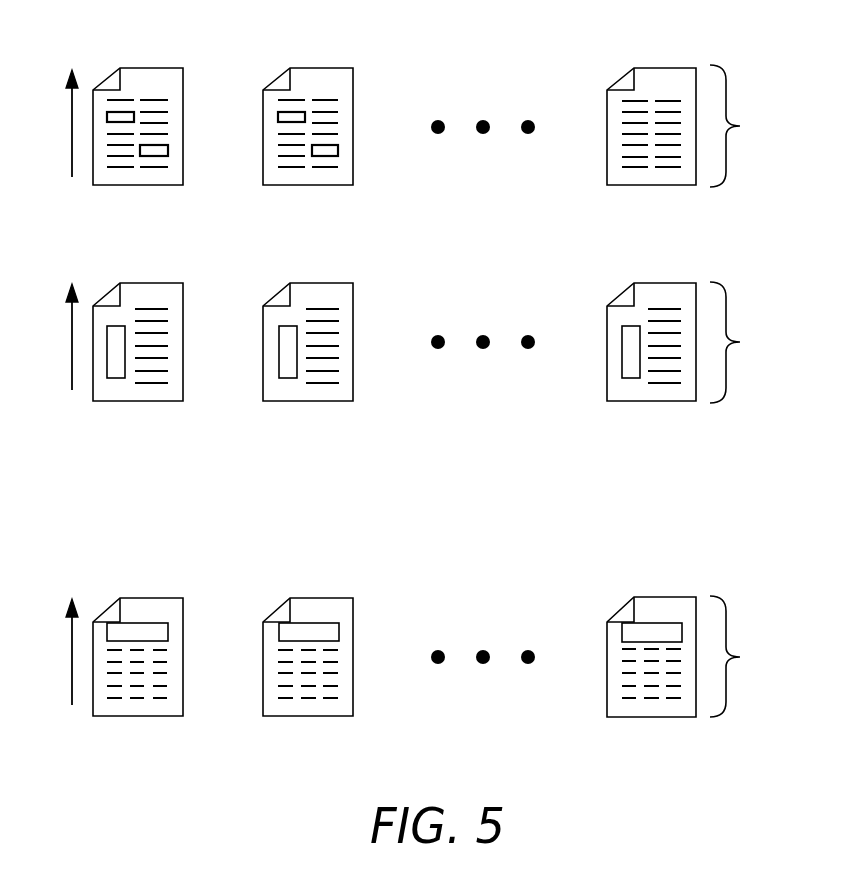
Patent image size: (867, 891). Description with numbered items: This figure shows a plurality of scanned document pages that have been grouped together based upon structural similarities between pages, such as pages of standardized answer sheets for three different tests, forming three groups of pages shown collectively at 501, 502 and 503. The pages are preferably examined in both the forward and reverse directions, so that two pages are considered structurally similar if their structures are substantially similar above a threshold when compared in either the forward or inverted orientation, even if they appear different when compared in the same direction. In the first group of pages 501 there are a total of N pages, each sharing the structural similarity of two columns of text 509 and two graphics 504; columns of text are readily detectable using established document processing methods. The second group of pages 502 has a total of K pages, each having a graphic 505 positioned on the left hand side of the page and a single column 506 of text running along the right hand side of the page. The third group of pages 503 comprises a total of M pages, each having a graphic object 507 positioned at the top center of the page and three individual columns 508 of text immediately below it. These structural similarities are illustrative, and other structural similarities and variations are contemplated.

The group of pages 501 is at (408, 127).
The group of pages 502 is at (408, 346).
The group of pages 503 is at (408, 661).
The graphics 504 is at (168, 145).
The graphic 505 is at (288, 326).
The single column of text 506 is at (328, 309).
The graphic object 507 is at (145, 623).
The three individual columns of text 508 is at (328, 648).
The two columns of text 509 is at (300, 100).